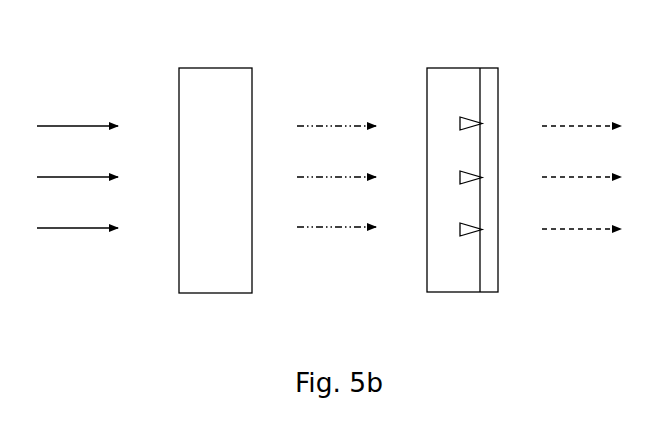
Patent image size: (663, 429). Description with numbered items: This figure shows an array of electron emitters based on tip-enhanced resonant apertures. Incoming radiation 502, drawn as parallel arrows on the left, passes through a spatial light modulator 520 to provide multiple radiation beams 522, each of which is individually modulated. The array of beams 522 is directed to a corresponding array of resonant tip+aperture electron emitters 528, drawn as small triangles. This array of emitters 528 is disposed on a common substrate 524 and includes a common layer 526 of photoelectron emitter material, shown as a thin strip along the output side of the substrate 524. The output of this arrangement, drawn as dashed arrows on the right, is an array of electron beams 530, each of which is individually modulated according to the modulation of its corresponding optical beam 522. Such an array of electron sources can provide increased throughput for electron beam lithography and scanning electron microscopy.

The radiation 502 is at (73, 126).
The spatial light modulator 520 is at (195, 190).
The radiation beams 522 is at (343, 125).
The common substrate 524 is at (447, 73).
The common layer of photoelectron emitter material 526 is at (490, 72).
The resonant tip+aperture electron emitters 528 is at (462, 246).
The electron beams 530 is at (585, 233).